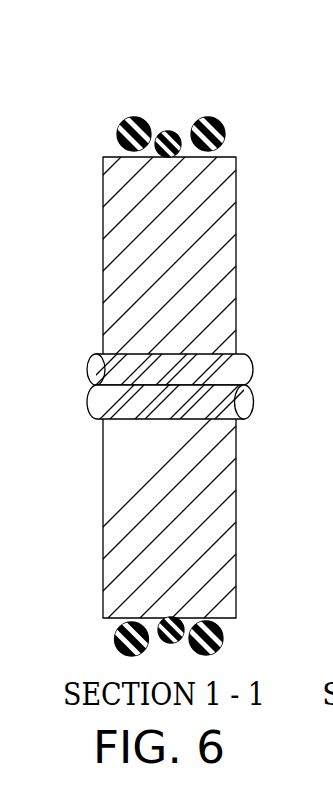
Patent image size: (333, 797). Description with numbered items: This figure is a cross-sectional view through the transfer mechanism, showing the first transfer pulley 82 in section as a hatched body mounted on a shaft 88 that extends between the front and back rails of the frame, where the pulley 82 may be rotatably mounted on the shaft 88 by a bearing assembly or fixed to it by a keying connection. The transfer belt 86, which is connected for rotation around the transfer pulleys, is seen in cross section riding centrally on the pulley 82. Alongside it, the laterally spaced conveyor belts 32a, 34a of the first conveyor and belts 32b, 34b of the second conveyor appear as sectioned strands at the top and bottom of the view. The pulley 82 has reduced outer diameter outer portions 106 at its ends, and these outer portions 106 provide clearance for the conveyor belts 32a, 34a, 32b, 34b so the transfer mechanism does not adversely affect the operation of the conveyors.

The belt 32a is at (178, 101).
The belt 32b is at (134, 117).
The transfer belt 86 is at (165, 132).
The belt 34a is at (249, 134).
The belt 34b is at (225, 131).
The shaft 88 is at (95, 414).
The first transfer pulley 82 is at (225, 528).
The outer portion 106 is at (103, 622).